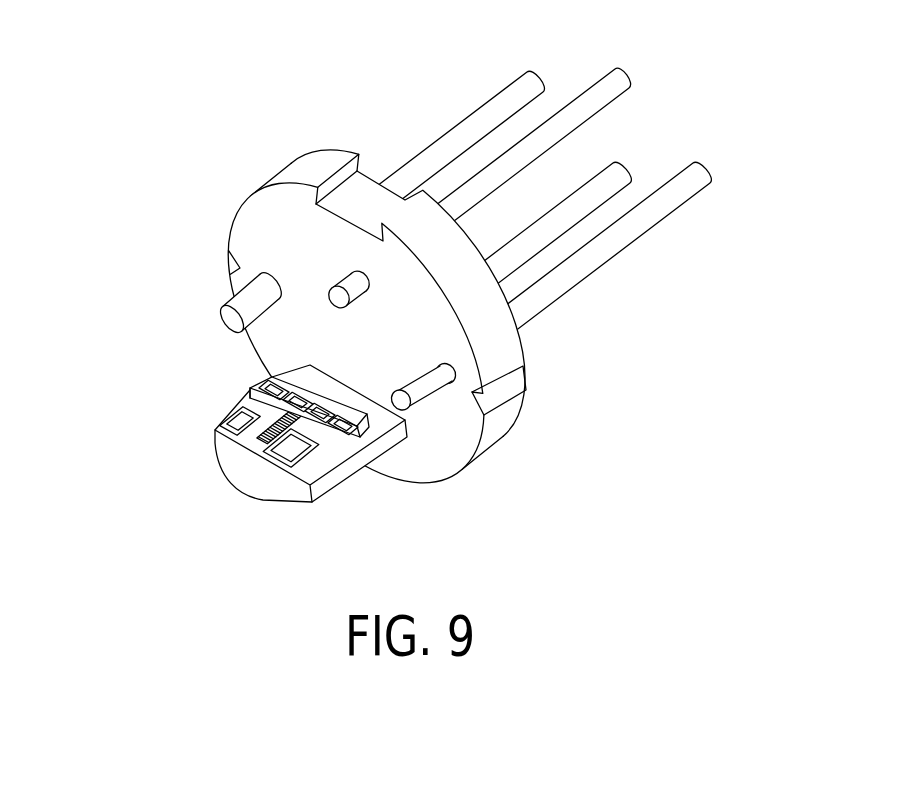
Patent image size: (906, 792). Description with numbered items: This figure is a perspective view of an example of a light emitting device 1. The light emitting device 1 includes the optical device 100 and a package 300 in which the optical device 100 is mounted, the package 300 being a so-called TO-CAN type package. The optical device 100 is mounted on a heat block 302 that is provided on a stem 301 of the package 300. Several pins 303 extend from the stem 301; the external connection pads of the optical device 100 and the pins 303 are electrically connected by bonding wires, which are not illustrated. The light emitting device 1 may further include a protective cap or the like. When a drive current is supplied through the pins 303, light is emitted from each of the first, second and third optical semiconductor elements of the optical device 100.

The light emitting device 1 is at (152, 141).
The optical device 100 is at (216, 430).
The package 300 is at (527, 436).
The stem 301 is at (257, 222).
The heat block 302 is at (266, 496).
The pins 303 is at (483, 120).